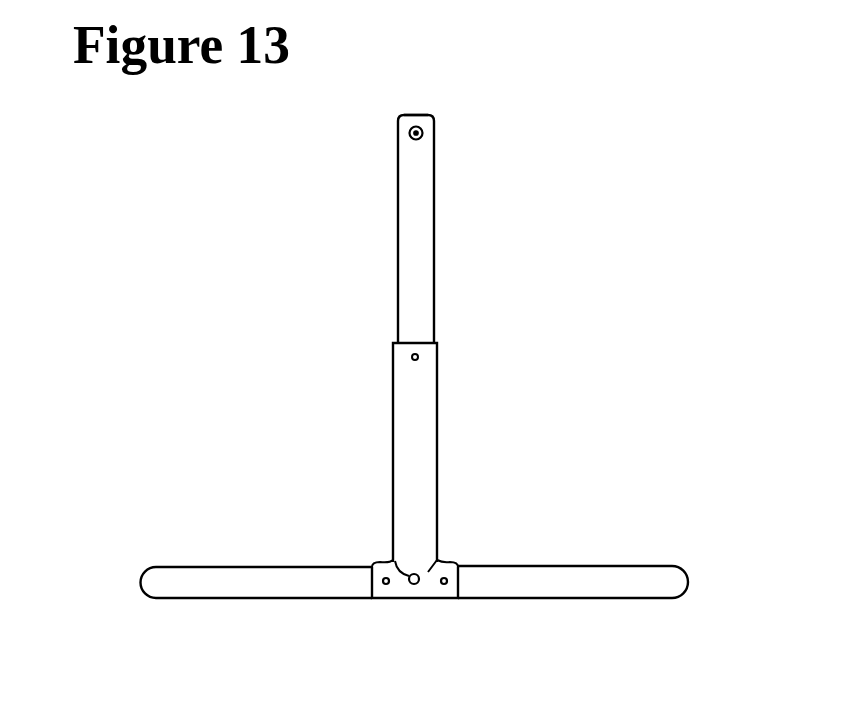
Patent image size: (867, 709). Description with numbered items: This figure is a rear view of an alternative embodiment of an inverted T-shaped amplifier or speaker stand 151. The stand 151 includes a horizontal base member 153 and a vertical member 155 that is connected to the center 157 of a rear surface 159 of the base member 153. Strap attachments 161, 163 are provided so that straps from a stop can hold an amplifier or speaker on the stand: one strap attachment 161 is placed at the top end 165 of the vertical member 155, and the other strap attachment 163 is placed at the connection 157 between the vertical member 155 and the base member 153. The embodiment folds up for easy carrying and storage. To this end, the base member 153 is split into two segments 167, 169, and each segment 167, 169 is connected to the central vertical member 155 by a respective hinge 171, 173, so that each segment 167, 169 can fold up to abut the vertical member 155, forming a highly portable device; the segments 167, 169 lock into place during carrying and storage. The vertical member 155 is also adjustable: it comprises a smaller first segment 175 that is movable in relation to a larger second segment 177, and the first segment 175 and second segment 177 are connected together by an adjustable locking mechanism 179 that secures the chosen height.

The stand 151 is at (540, 332).
The base member 153 is at (506, 559).
The vertical member 155 is at (396, 295).
The center 157 is at (434, 570).
The rear surface 159 is at (556, 575).
The strap attachment 161 is at (406, 133).
The strap attachment 163 is at (386, 563).
The top end 165 is at (421, 115).
The segment 167 is at (236, 563).
The segment 169 is at (643, 562).
The hinge 171 is at (372, 595).
The hinge 173 is at (444, 586).
The first segment 175 is at (435, 188).
The second segment 177 is at (437, 460).
The adjustable locking mechanism 179 is at (421, 356).